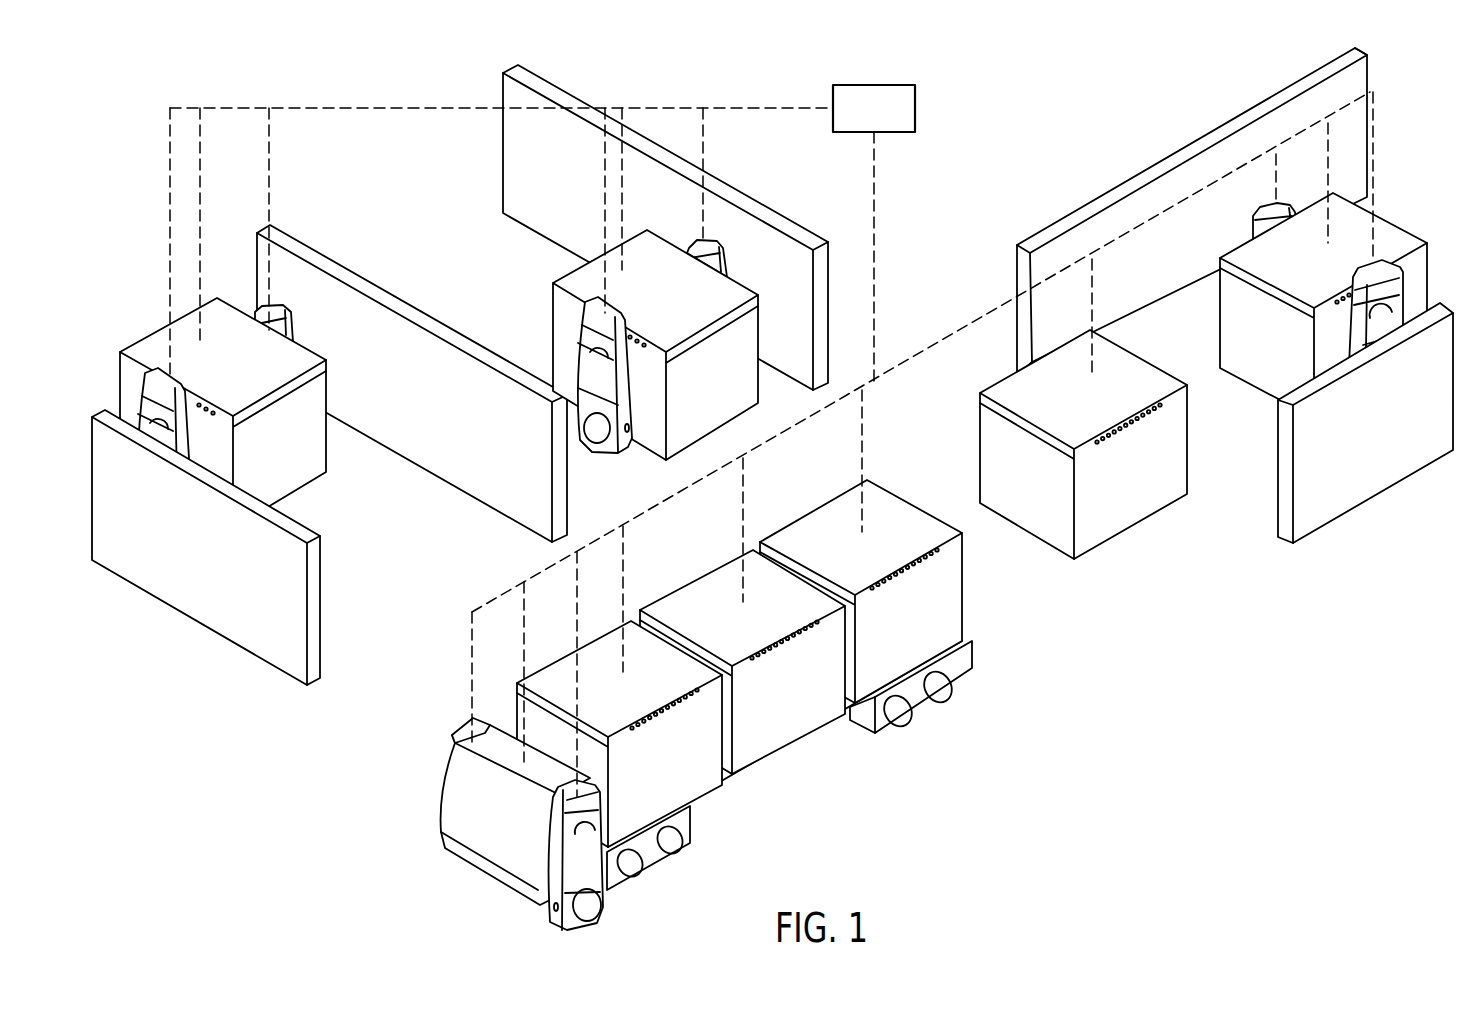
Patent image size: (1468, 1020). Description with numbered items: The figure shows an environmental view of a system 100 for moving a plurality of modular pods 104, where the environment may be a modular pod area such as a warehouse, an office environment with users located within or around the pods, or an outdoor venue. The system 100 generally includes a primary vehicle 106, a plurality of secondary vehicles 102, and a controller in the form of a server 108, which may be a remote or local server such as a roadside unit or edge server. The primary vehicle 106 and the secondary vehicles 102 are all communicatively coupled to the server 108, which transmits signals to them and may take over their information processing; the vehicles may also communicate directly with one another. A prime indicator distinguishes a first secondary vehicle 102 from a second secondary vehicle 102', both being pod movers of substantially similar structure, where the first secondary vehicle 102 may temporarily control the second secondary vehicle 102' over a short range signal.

The system 100 is at (727, 423).
The secondary vehicle 102 is at (847, 281).
The second secondary vehicle 102' is at (385, 614).
The modular pod 104 is at (143, 348).
The primary vehicle 106 is at (527, 767).
The server 108 is at (894, 124).